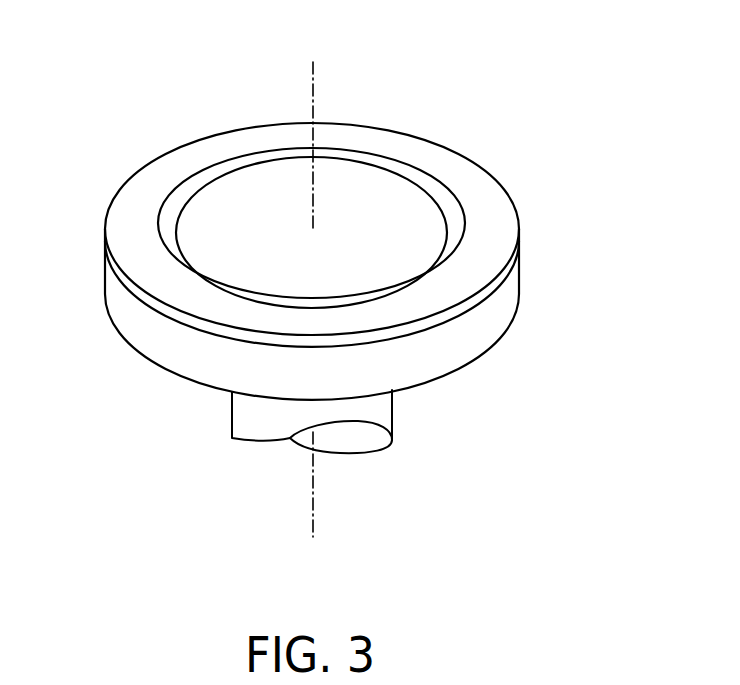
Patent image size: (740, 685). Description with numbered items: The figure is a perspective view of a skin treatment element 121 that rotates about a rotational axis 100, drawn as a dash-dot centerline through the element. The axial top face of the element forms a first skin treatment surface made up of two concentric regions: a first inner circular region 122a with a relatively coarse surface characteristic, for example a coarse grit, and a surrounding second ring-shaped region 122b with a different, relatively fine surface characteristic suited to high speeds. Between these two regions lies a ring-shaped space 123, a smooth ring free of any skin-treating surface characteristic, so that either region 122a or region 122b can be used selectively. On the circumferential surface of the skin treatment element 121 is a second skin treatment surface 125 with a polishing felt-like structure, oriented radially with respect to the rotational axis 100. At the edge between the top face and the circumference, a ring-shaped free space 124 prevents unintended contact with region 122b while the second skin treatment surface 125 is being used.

The rotational axis 100 is at (310, 100).
The skin treatment element 121 is at (141, 98).
The first inner circular region 122a is at (356, 192).
The second ring-shaped region 122b is at (492, 218).
The ring-shaped space 123 is at (440, 195).
The ring-shaped free space 124 is at (515, 271).
The second skin treatment surface 125 is at (483, 335).